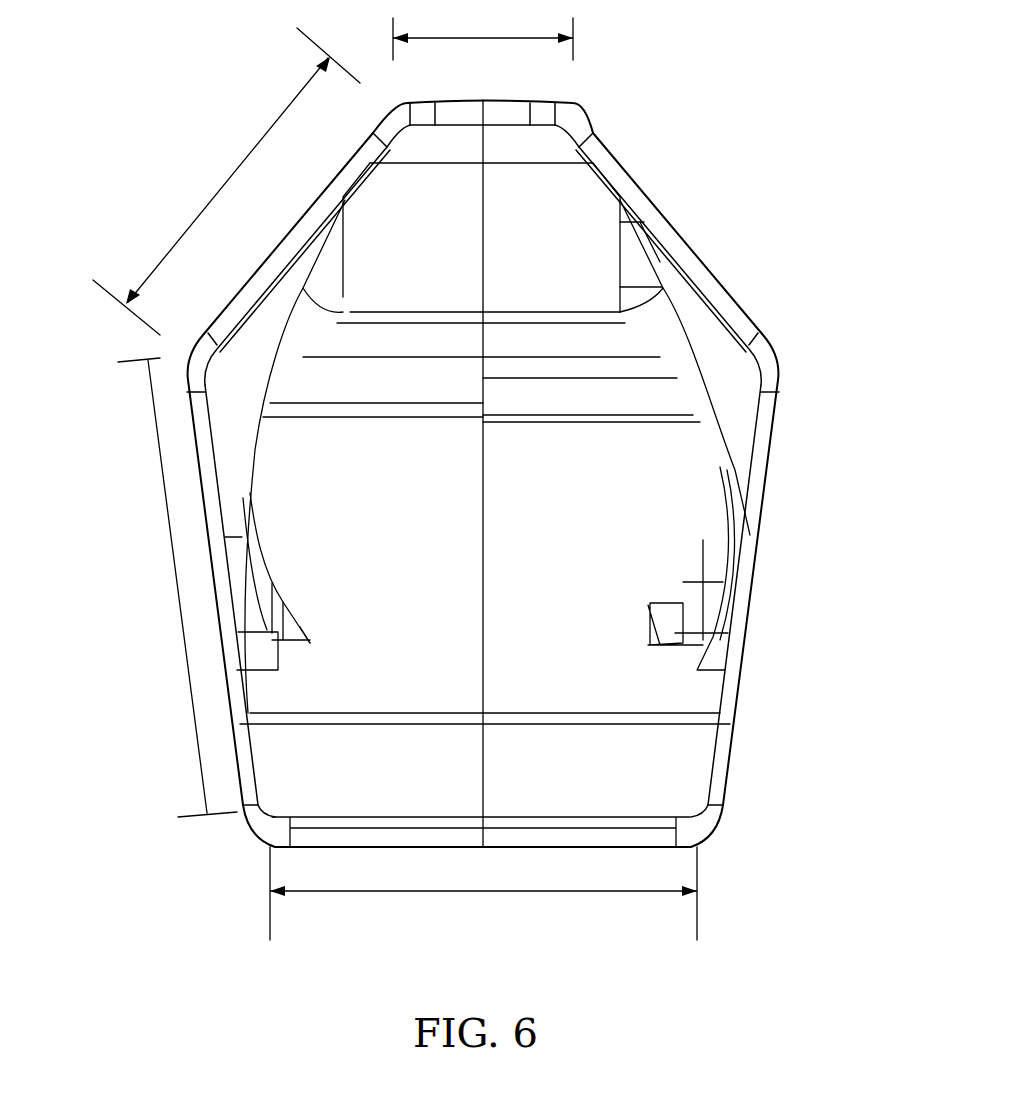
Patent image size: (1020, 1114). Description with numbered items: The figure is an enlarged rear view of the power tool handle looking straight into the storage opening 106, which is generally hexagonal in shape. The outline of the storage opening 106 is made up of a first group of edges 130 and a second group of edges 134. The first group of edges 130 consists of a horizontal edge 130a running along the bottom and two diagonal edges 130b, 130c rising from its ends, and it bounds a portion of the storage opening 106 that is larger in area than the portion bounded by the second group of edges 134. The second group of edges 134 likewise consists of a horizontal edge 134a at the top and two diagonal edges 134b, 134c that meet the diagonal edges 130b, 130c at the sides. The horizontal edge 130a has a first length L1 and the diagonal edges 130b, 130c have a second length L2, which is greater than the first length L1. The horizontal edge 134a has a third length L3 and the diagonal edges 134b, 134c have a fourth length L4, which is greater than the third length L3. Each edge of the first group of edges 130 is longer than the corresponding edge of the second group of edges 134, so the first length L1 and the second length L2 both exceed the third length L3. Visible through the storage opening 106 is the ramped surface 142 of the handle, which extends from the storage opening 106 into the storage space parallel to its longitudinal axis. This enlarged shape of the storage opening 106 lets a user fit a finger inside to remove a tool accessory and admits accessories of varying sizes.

The first group of edges 130 is at (830, 525).
The horizontal edge 130a is at (543, 823).
The diagonal edge 130b is at (235, 683).
The diagonal edge 130c is at (743, 573).
The second group of edges 134 is at (798, 212).
The horizontal edge 134a is at (513, 100).
The diagonal edge 134b is at (160, 334).
The diagonal edge 134c is at (680, 227).
The ramped surface 142 is at (350, 727).
The storage opening 106 is at (612, 774).
The first length L1 is at (697, 930).
The second length L2 is at (178, 817).
The third length L3 is at (393, 27).
The fourth length L4 is at (307, 39).